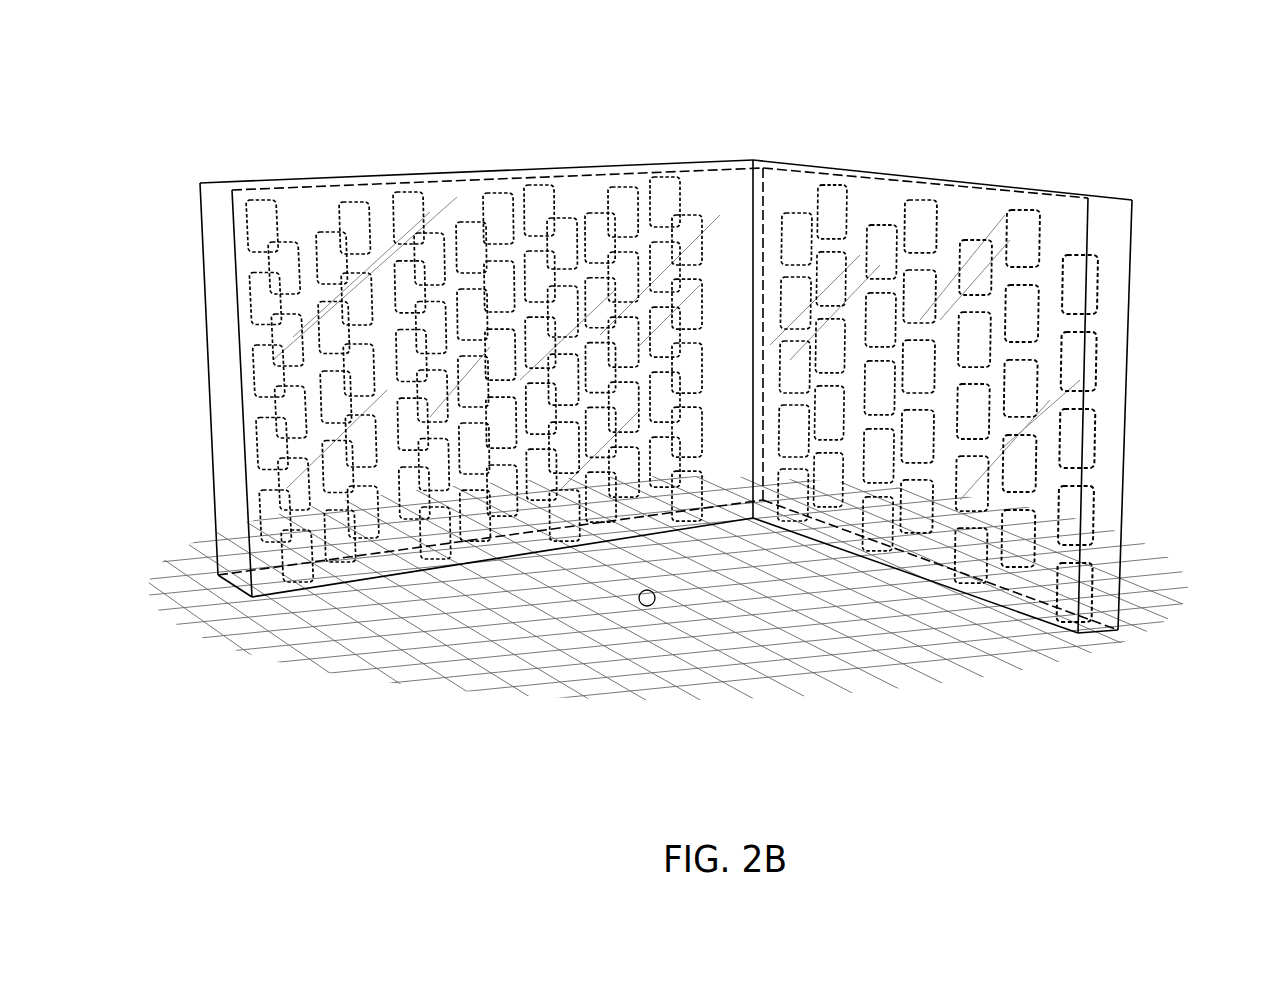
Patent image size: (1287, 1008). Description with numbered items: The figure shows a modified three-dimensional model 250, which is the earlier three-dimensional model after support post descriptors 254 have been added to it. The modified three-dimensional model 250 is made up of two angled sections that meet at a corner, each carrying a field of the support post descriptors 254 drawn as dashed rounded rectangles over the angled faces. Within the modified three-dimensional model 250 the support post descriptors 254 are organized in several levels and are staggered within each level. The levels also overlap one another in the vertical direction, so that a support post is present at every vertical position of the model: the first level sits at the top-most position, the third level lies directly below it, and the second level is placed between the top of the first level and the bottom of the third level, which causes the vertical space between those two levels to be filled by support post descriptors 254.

The modified 3D model 250 is at (1135, 58).
The support post descriptors 254 is at (692, 213).